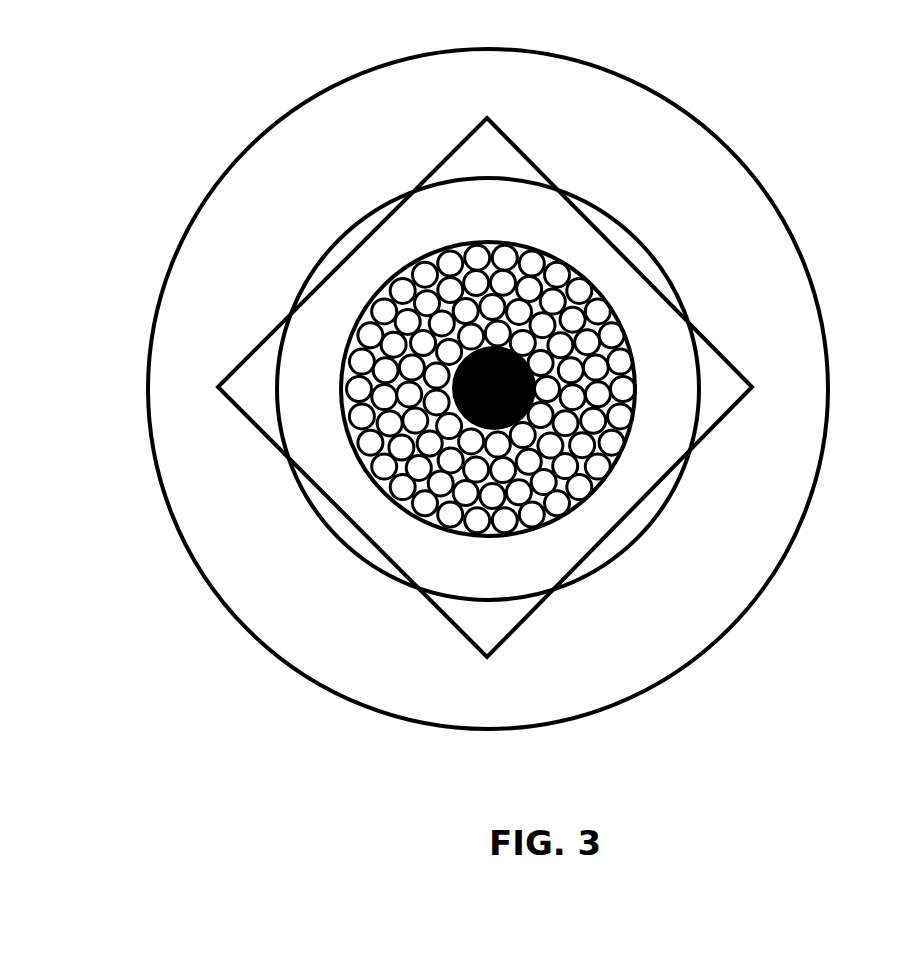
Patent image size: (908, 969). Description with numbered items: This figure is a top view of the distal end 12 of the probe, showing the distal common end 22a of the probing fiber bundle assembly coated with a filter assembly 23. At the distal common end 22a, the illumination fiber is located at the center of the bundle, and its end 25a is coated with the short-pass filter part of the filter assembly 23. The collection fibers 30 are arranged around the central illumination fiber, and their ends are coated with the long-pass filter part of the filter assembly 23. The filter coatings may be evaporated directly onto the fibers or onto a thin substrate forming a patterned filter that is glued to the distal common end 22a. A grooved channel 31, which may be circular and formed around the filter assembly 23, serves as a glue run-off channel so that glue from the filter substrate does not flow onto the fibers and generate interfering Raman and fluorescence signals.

The distal end of the probe 12 is at (800, 208).
The grooved channel 31 is at (318, 258).
The filter assembly 23 is at (730, 390).
The distal common end of the probing fiber bundle assembly 22a is at (617, 311).
The end of the illumination fiber 25a is at (466, 348).
The collection fibers 30 is at (392, 470).